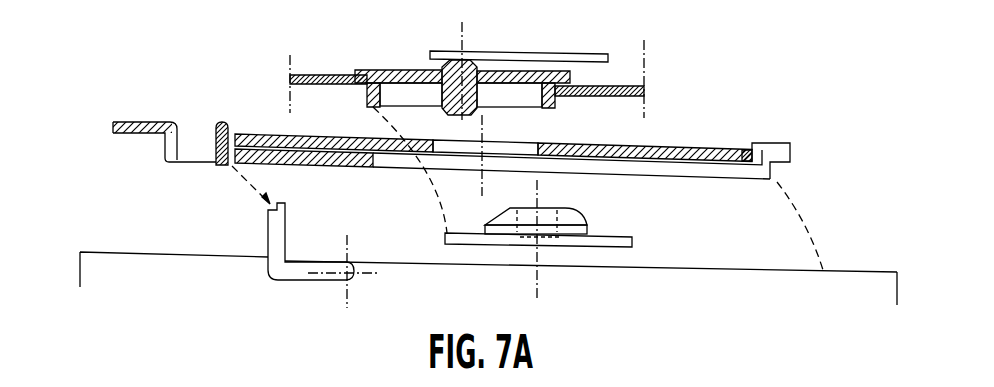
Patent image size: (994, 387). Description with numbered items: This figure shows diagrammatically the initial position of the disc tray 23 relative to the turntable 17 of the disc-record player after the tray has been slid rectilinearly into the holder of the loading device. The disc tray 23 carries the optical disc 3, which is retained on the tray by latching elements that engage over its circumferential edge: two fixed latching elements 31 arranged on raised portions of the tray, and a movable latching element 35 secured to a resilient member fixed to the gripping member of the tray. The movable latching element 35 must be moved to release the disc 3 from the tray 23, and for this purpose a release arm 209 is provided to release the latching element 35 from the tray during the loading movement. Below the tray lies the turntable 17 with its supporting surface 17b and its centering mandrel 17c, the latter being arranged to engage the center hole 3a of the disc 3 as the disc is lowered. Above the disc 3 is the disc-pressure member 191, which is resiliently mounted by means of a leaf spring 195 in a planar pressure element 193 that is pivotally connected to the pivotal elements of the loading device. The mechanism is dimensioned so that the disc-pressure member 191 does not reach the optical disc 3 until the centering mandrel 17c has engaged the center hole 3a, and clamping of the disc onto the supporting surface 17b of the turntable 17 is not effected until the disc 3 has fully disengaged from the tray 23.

The optical disc 3 is at (531, 143).
The center hole 3a is at (518, 150).
The turntable 17 is at (632, 241).
The supporting surface 17b is at (616, 232).
The centering mandrel 17c is at (574, 214).
The disc tray 23 is at (775, 164).
The fixed latching element 31 is at (752, 144).
The movable latching element 35 is at (223, 125).
The disc-pressure member 191 is at (387, 70).
The pressure element 193 is at (623, 87).
The leaf spring 195 is at (566, 54).
The release arm 209 is at (268, 247).